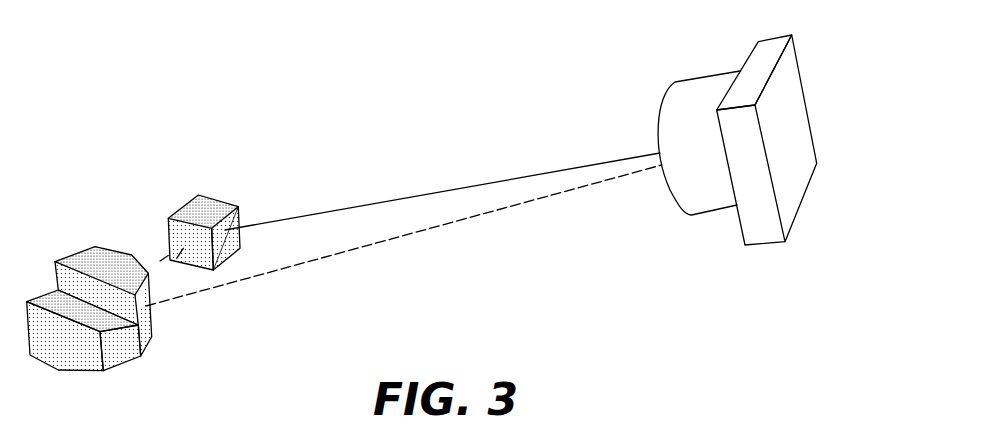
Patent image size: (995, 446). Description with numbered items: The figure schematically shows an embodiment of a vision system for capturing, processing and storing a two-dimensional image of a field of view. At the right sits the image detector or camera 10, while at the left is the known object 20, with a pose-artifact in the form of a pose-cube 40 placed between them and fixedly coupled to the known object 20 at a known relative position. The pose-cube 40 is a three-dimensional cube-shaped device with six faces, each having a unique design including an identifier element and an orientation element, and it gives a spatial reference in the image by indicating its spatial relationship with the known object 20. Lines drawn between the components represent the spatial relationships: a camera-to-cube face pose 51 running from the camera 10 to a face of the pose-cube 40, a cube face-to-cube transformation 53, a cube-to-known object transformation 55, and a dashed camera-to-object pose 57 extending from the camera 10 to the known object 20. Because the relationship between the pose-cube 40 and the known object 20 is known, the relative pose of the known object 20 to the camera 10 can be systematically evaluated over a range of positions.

The image detector 10 is at (682, 112).
The known object 20 is at (128, 349).
The pose-cube 40 is at (217, 199).
The camera-to-cube face pose 51 is at (428, 194).
The cube face-to-cube transformation 53 is at (237, 239).
The cube-to-known object transformation 55 is at (160, 261).
The camera-to-object pose 57 is at (374, 243).